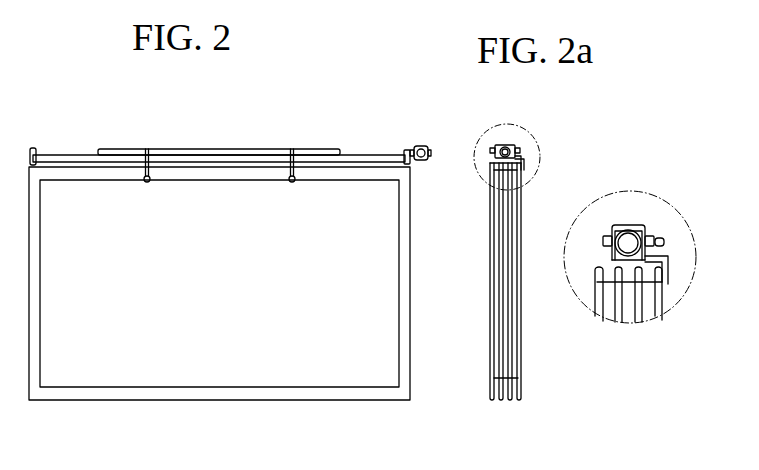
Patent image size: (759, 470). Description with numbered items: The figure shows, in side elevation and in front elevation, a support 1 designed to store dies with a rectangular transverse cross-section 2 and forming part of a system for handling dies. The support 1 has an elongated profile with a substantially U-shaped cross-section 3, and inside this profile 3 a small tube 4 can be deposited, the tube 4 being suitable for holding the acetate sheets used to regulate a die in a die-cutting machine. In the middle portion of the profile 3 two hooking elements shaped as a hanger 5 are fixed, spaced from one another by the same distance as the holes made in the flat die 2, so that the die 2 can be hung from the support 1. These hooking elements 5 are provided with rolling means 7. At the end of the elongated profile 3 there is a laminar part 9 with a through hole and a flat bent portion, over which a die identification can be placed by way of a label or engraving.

In FIG. 2, the support 1 is at (82, 140).
In FIG. 2, the die with rectangular transverse cross-section 2 is at (229, 345).
In FIG. 2A, the die with rectangular transverse cross-section 2 is at (487, 370).
In FIG. 2, the U-shaped profile 3 is at (381, 152).
In FIG. 2, the small tube 4 is at (200, 148).
In FIG. 2A, the small tube 4 is at (629, 230).
In FIG. 2, the hanger 5 is at (291, 185).
In FIG. 2A, the hanger 5 is at (664, 257).
In FIG. 2A, the rolling means 7 is at (606, 235).
In FIG. 2, the laminar part 9 is at (421, 145).